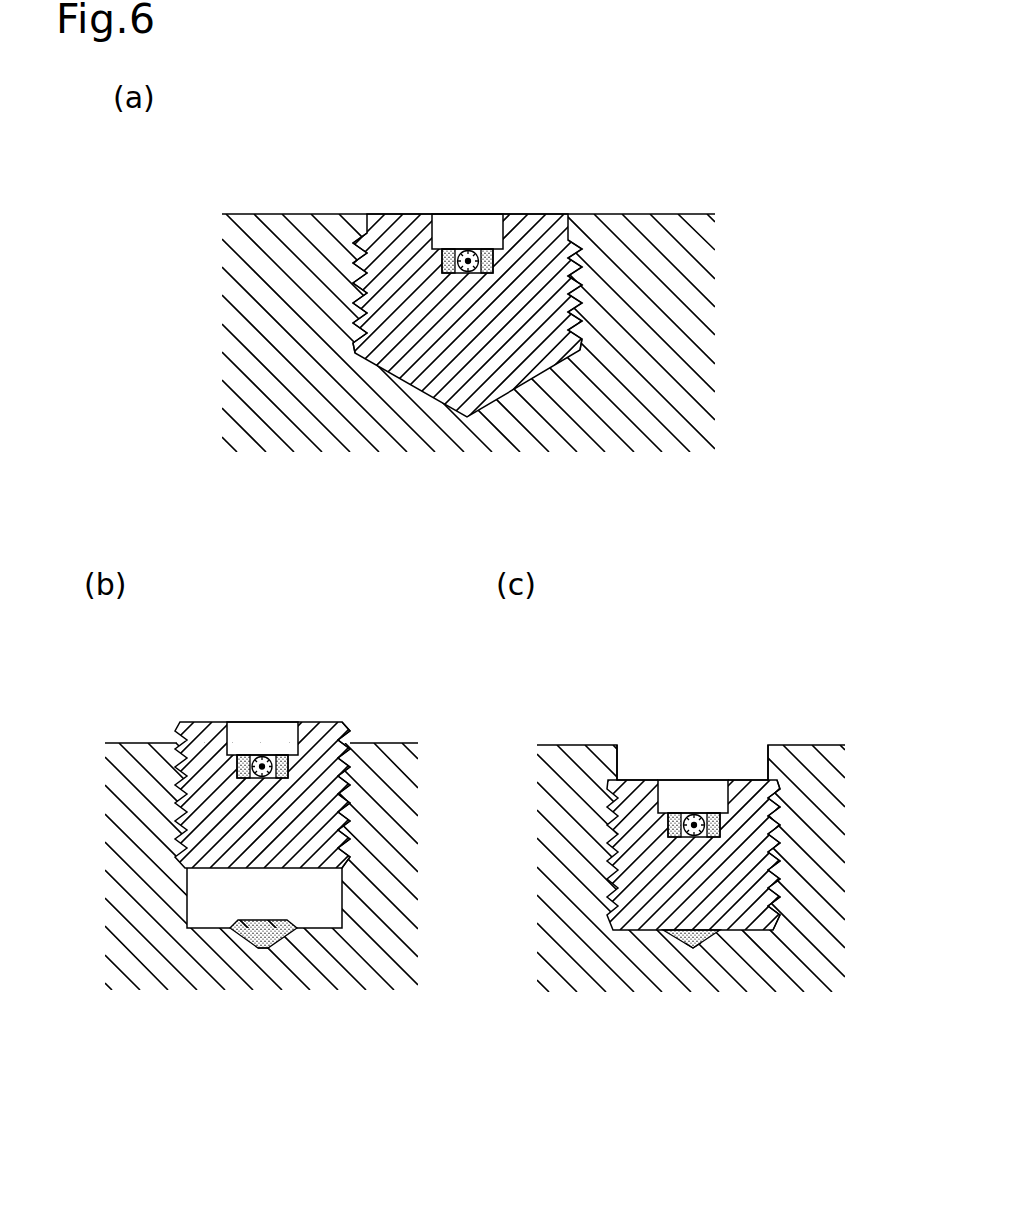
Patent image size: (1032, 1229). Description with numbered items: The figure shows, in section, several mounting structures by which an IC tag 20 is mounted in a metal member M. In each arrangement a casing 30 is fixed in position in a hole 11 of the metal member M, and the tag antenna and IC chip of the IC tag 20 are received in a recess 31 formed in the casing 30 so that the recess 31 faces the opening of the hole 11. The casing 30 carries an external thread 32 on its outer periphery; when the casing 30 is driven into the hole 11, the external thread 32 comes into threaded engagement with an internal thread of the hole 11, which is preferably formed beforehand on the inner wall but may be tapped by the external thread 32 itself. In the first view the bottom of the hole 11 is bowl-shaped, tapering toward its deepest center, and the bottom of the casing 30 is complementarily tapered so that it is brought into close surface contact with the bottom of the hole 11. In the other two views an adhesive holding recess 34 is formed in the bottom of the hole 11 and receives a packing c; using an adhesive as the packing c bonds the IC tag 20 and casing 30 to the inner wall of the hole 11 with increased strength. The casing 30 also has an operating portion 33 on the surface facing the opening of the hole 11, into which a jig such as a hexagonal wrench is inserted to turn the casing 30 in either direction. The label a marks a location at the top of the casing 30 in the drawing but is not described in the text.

The hole 11 is at (392, 268).
The IC tag 20 is at (440, 263).
The casing 30 is at (420, 308).
The recess 31 is at (482, 248).
The external thread 32 is at (582, 312).
The operating portion 33 is at (435, 236).
The adhesive holding recess 34 is at (247, 933).
The metal member M is at (622, 267).
The gap a is at (238, 760).
The packing c is at (267, 943).